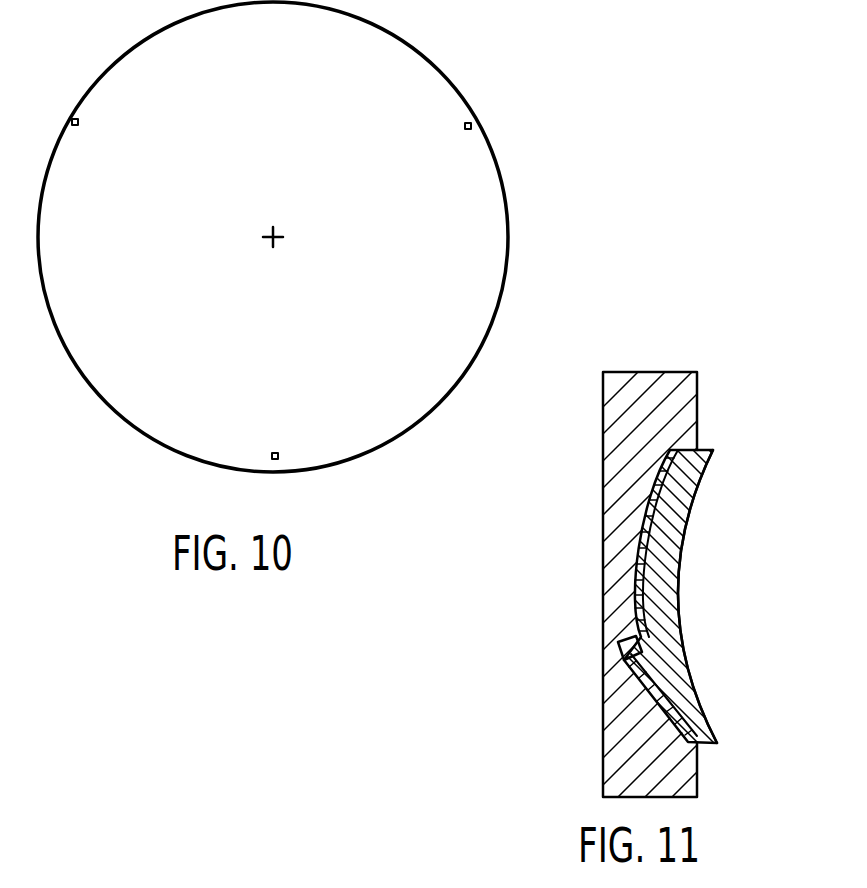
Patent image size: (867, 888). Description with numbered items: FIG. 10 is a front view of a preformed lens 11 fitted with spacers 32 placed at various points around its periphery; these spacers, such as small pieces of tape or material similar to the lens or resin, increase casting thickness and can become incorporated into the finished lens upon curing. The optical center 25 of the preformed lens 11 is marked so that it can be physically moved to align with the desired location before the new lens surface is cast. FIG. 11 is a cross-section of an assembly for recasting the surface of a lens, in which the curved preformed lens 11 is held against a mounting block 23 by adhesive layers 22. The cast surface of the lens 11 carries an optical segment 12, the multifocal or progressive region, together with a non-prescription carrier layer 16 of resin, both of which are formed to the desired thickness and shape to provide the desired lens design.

In FIG. 10, the preformed lens 11 is at (508, 262).
In FIG. 11, the preformed lens 11 is at (705, 450).
In FIG. 11, the optical segment 12 is at (618, 655).
In FIG. 11, the non-prescription carrier layer 16 is at (693, 488).
In FIG. 11, the adhesive layer 22 is at (640, 545).
In FIG. 11, the mounting block 23 is at (686, 378).
In FIG. 10, the optical center 25 is at (277, 233).
In FIG. 10, the alignment marker 32 is at (71, 118).